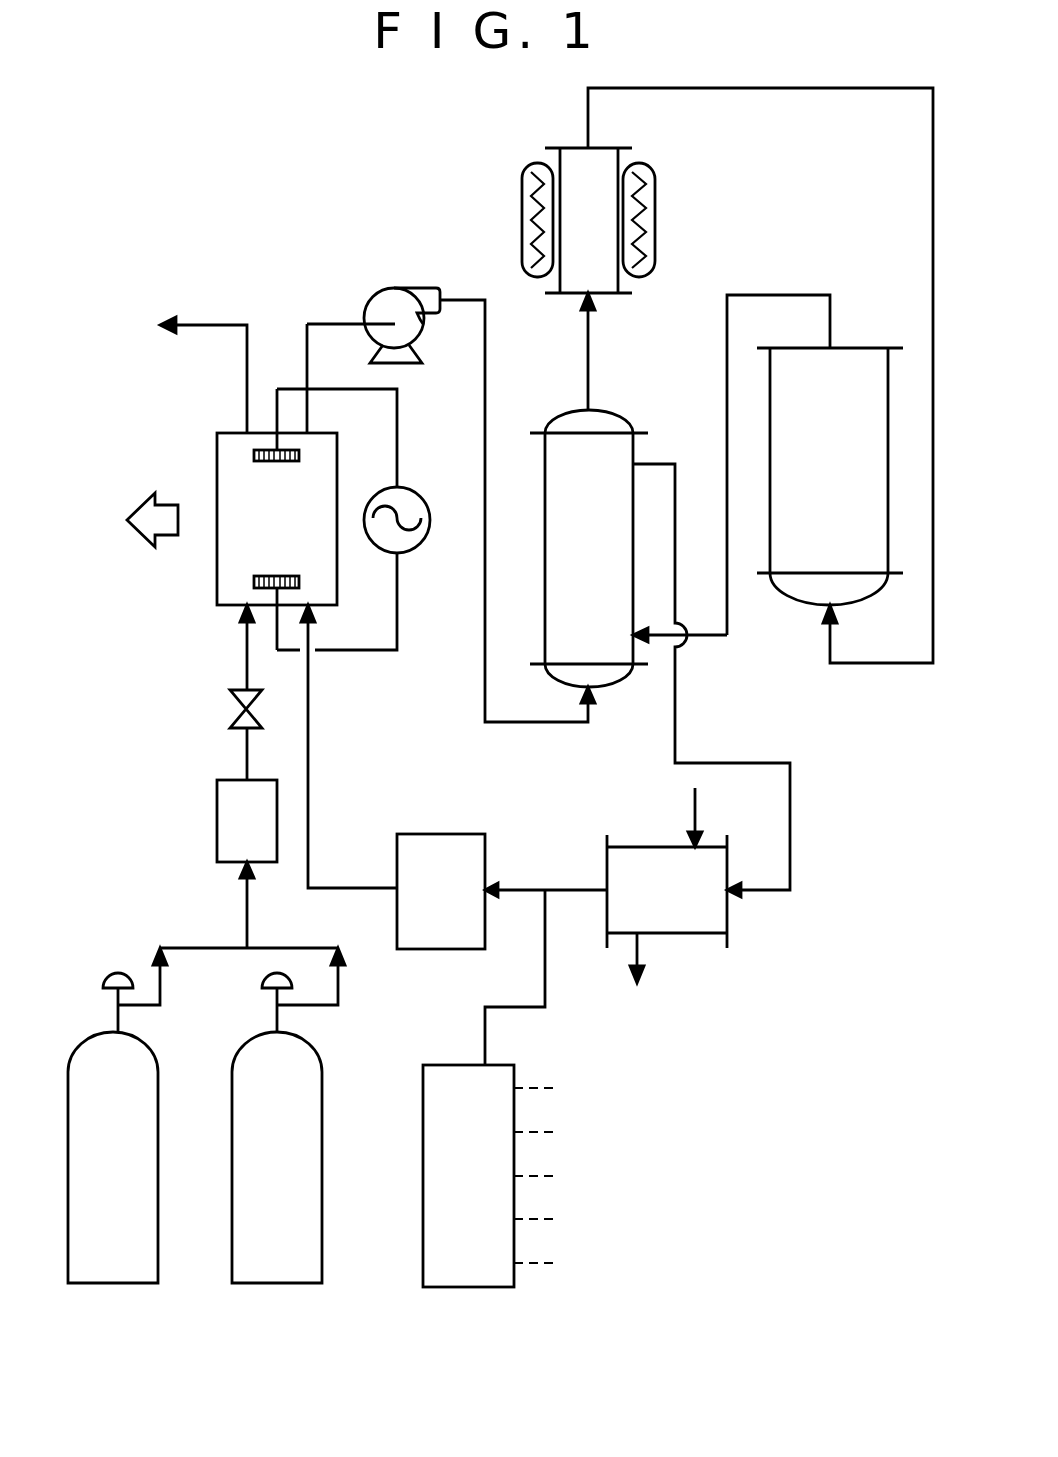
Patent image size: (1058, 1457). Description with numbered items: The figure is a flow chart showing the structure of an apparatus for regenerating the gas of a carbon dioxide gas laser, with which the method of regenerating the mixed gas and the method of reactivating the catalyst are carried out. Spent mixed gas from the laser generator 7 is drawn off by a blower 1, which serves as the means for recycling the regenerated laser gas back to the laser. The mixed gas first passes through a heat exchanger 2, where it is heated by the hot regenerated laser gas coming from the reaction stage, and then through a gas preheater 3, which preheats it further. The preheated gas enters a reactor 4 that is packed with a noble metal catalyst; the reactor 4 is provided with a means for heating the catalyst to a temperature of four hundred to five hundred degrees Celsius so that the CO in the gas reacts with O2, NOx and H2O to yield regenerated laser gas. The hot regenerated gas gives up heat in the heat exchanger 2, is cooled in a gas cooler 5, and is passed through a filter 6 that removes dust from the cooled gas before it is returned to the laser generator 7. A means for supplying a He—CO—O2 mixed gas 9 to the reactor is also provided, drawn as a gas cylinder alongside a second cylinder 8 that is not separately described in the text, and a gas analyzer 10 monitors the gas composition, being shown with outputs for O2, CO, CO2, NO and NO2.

The blower 1 is at (390, 298).
The heat exchanger 2 is at (565, 495).
The gas preheater 3 is at (602, 173).
The reactor 4 is at (838, 382).
The gas cooler 5 is at (672, 912).
The filter 6 is at (437, 928).
The laser generator 7 is at (240, 490).
The gas cylinder 8 is at (140, 1155).
The He—CO—O2 mixed gas 9 is at (305, 1153).
The gas analyzer 10 is at (500, 1063).